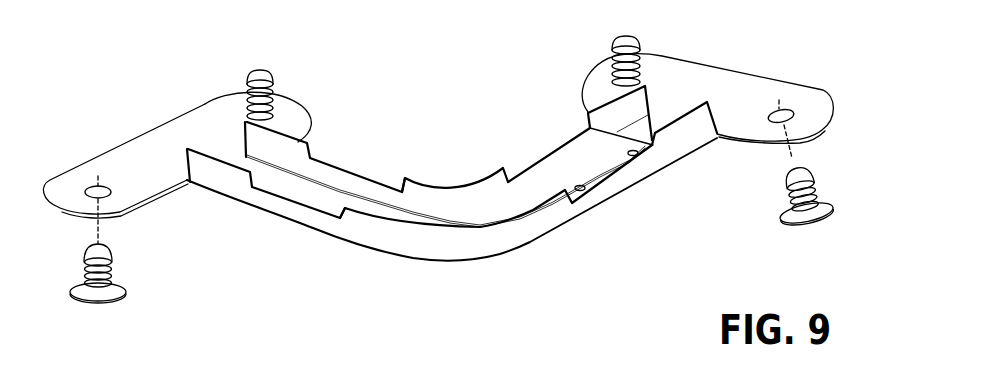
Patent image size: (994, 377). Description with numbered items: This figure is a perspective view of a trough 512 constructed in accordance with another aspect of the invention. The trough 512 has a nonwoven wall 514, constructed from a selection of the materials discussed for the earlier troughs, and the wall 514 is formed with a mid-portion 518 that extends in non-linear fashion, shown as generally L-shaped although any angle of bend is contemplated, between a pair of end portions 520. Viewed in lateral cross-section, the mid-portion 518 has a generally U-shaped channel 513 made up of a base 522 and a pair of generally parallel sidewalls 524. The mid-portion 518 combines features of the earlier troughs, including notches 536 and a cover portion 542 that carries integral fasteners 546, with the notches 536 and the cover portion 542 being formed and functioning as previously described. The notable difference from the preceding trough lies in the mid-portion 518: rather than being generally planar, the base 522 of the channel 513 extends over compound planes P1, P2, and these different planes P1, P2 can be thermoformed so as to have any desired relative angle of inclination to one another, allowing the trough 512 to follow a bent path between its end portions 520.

The trough 512 is at (427, 173).
The U-shaped channel 513 is at (256, 169).
The nonwoven wall 514 is at (708, 65).
The mid-portion 518 is at (190, 182).
The end portions 520 is at (43, 190).
The base 522 is at (641, 128).
The sidewalls 524 is at (305, 148).
The notches 536 is at (304, 203).
The cover portion 542 is at (563, 165).
The integral fasteners 546 is at (586, 186).
The plane P1 is at (178, 137).
The plane P2 is at (768, 92).